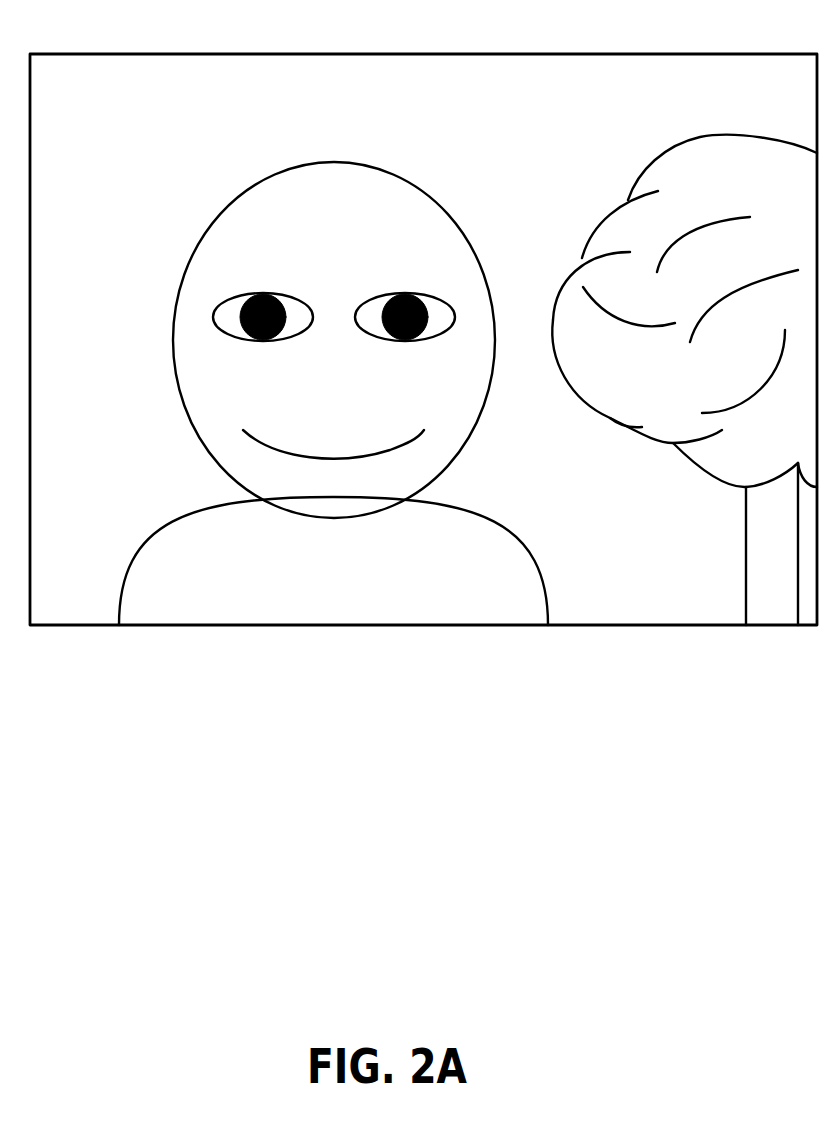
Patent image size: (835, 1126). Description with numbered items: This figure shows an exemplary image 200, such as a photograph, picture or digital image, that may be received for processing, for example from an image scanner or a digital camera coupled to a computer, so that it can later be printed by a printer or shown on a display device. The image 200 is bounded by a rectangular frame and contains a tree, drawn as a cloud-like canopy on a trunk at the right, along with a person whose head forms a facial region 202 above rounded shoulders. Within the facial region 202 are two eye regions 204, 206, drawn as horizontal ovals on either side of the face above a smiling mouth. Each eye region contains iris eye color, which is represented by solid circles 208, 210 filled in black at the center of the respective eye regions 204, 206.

The image 200 is at (638, 55).
The facial region 202 is at (314, 162).
The eye region 204 is at (214, 322).
The eye region 206 is at (456, 318).
The solid circle 208 is at (259, 293).
The solid circle 210 is at (405, 293).